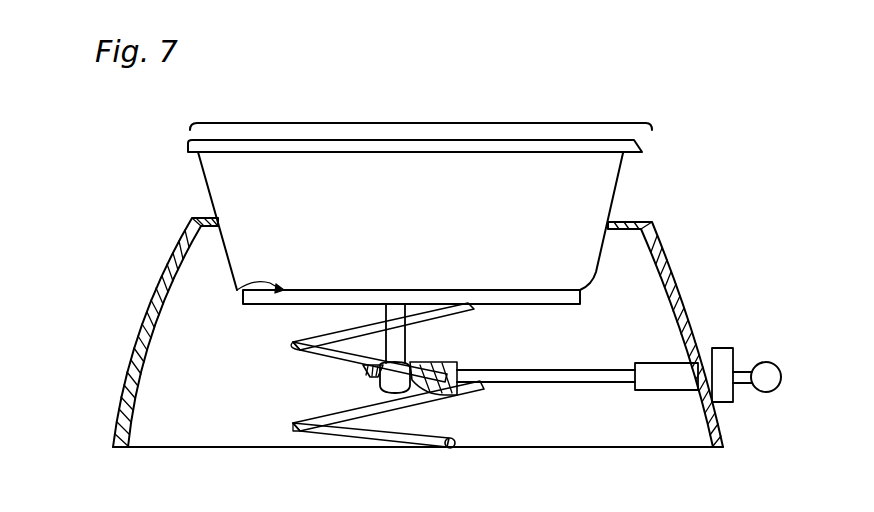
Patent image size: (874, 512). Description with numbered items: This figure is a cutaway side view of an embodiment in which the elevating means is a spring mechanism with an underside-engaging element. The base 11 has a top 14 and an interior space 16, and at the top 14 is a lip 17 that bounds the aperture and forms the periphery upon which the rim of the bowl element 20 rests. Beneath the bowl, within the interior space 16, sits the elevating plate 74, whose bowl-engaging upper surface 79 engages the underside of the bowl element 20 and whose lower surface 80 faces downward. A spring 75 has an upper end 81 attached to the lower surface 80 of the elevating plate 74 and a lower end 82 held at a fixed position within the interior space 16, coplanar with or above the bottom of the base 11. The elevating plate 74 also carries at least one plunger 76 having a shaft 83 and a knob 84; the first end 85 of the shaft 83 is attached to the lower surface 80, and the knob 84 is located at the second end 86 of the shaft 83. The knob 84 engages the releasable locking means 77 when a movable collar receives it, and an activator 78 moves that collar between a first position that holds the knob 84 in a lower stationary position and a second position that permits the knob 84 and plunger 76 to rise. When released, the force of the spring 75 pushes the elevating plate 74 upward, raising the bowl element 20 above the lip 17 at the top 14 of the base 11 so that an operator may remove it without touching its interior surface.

The base 11 is at (58, 206).
The top 14 is at (166, 222).
The interior space 16 is at (218, 406).
The lip 17 is at (205, 217).
The bowl element 20 is at (414, 123).
The elevating plate 74 is at (583, 298).
The spring 75 is at (494, 308).
The plunger 76 is at (383, 342).
The releasable locking means 77 is at (368, 376).
The activator 78 is at (553, 378).
The bowl-engaging upper surface 79 is at (236, 291).
The lower surface 80 is at (549, 305).
The upper end 81 is at (467, 320).
The lower end 82 is at (451, 436).
The shaft 83 is at (403, 342).
The knob 84 is at (397, 395).
The first end 85 is at (377, 309).
The second end 86 is at (443, 356).